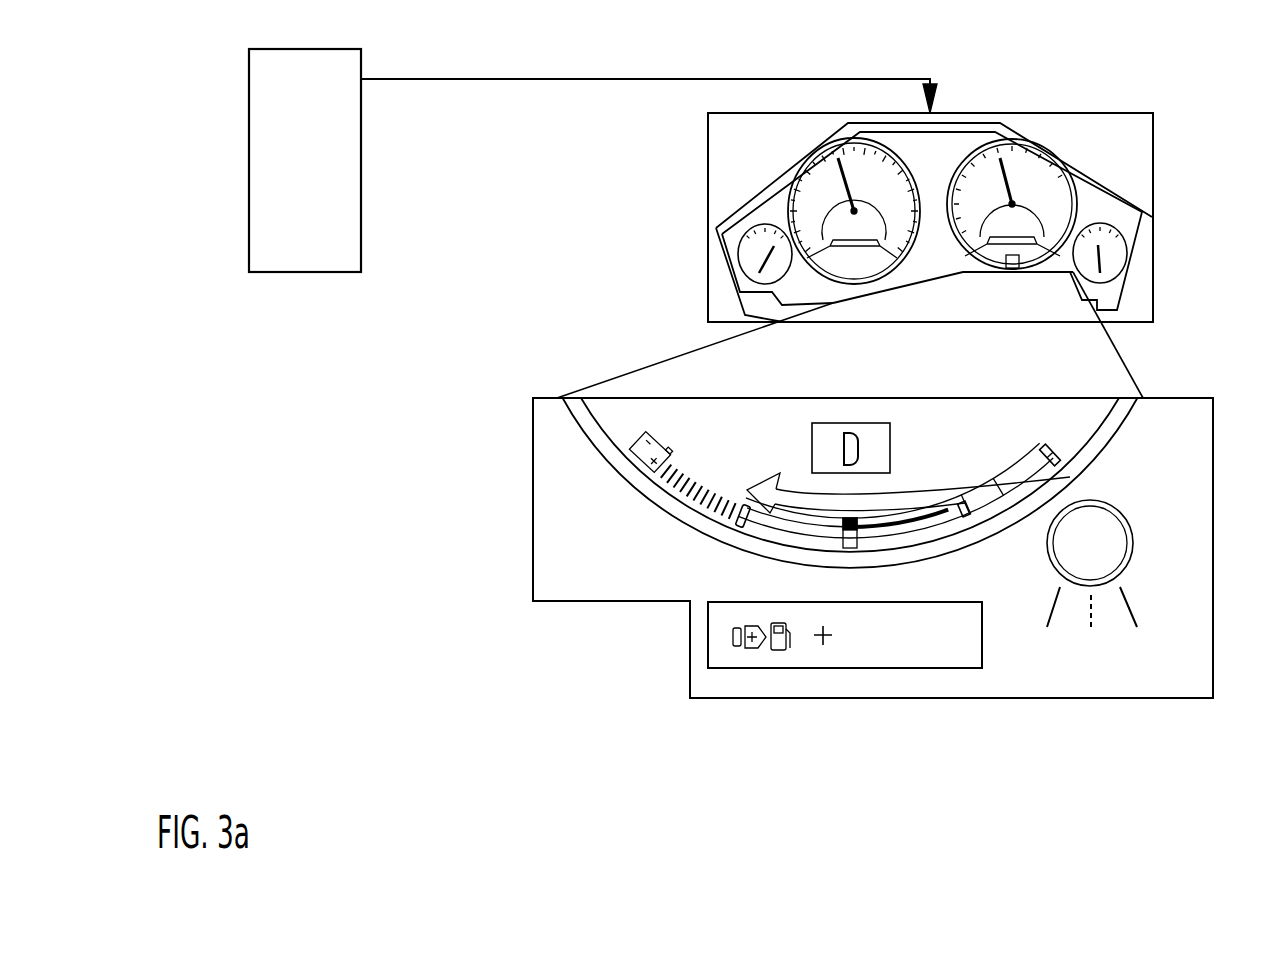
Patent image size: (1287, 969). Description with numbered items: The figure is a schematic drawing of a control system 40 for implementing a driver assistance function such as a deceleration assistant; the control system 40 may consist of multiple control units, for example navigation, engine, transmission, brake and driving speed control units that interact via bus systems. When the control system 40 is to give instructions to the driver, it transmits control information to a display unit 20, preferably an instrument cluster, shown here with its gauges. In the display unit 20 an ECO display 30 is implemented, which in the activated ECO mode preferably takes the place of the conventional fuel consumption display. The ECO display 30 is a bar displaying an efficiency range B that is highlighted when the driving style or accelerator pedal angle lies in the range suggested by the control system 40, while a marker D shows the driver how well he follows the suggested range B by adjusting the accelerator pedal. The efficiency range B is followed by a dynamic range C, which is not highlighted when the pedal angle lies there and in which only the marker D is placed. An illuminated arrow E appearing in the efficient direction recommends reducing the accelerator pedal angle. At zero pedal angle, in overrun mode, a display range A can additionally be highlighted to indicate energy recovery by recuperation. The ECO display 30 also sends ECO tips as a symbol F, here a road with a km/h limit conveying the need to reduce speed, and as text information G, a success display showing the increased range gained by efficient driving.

The control system 40 is at (361, 224).
The display unit 20 is at (708, 208).
The ECO display 30 is at (533, 438).
The display range A is at (672, 484).
The efficiency range B is at (953, 520).
The dynamic range C is at (1027, 513).
The marker D is at (1047, 477).
The illuminated arrow E is at (752, 547).
The symbol F is at (1125, 548).
The text information G is at (893, 670).